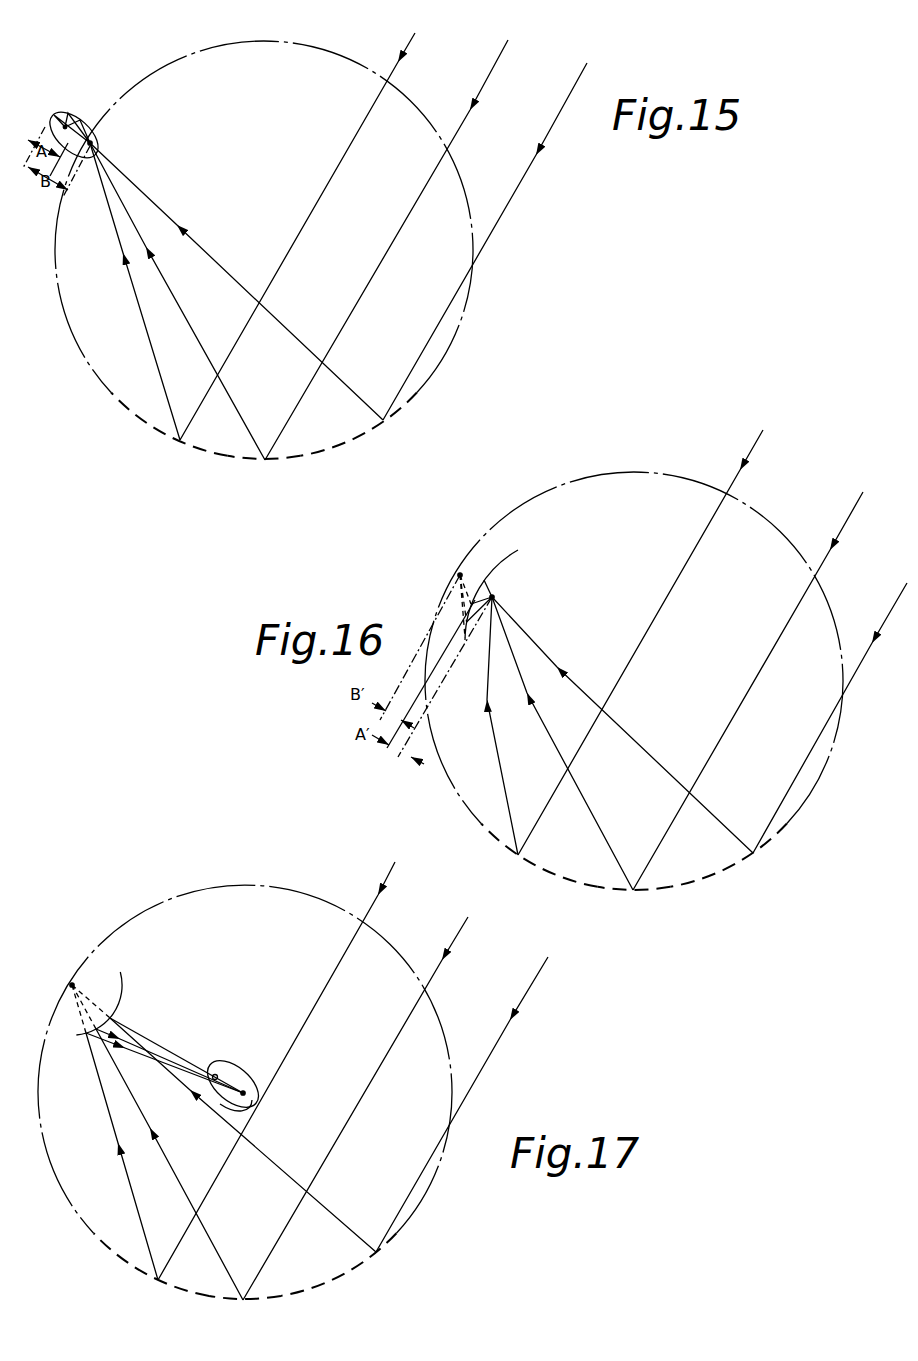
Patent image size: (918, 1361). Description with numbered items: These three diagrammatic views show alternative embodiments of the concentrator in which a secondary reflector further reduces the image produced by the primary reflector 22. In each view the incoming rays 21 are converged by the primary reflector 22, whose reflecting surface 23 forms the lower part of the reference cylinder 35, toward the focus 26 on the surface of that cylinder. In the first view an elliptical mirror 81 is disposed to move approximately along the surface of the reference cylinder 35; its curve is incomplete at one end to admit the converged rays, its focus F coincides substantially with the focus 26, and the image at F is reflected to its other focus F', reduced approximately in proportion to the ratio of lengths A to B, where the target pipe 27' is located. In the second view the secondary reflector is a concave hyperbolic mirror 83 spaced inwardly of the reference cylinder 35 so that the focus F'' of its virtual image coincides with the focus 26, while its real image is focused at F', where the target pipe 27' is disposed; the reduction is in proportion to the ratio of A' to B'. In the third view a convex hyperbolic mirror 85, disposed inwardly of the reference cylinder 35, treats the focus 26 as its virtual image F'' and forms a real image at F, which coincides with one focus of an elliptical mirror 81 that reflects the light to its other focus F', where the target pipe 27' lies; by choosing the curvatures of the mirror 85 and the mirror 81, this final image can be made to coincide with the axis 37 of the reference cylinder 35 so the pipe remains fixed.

In FIG. 15, the incident solar rays 21 is at (545, 140).
In FIG. 16, the incident solar rays 21 is at (848, 519).
In FIG. 17, the incident solar rays 21 is at (458, 937).
In FIG. 15, the primary reflector 22 is at (277, 406).
In FIG. 16, the primary reflector 22 is at (636, 846).
In FIG. 17, the primary reflector 22 is at (250, 1270).
In FIG. 15, the reflective surface of mirror 23 is at (283, 462).
In FIG. 16, the reflective surface of mirror 23 is at (668, 890).
In FIG. 17, the reflective surface of mirror 23 is at (258, 1300).
In FIG. 15, the focus 26 is at (92, 142).
In FIG. 16, the focus 26 is at (459, 576).
In FIG. 17, the focus 26 is at (70, 987).
In FIG. 15, the target pipe 27' is at (54, 113).
In FIG. 16, the target pipe 27' is at (539, 591).
In FIG. 17, the target pipe 27' is at (222, 1126).
In FIG. 15, the reference cylinder 35 is at (262, 40).
In FIG. 16, the reference cylinder 35 is at (660, 473).
In FIG. 17, the reference cylinder 35 is at (262, 884).
In FIG. 17, the axis of the reference cylinder 37 is at (246, 1096).
In FIG. 15, the elliptical mirror 81 is at (97, 135).
In FIG. 17, the elliptical mirror 81 is at (247, 1072).
In FIG. 16, the concave hyperbolic mirror 83 is at (503, 558).
In FIG. 17, the convex hyperbolic mirror 85 is at (120, 992).